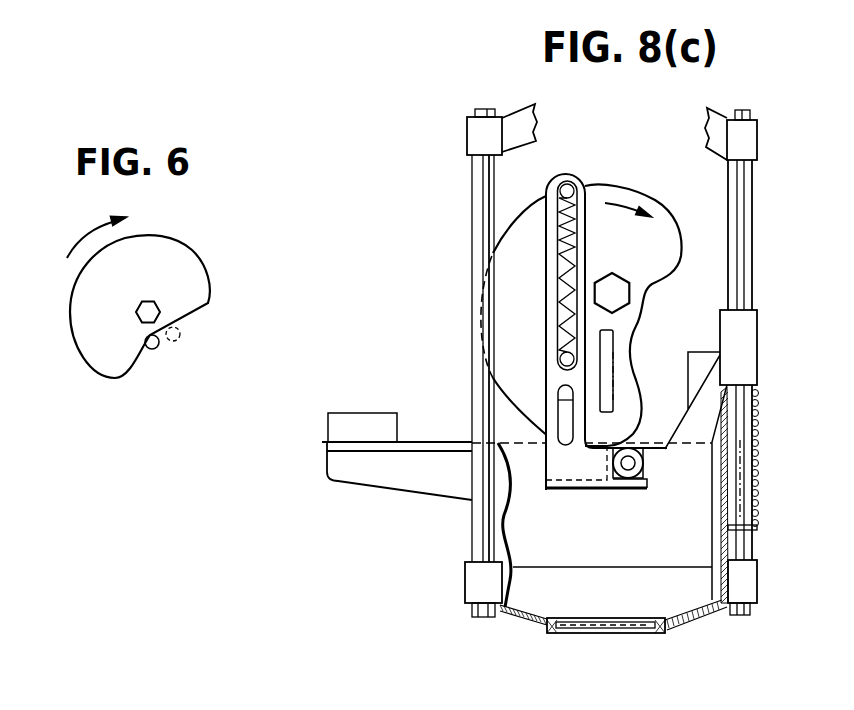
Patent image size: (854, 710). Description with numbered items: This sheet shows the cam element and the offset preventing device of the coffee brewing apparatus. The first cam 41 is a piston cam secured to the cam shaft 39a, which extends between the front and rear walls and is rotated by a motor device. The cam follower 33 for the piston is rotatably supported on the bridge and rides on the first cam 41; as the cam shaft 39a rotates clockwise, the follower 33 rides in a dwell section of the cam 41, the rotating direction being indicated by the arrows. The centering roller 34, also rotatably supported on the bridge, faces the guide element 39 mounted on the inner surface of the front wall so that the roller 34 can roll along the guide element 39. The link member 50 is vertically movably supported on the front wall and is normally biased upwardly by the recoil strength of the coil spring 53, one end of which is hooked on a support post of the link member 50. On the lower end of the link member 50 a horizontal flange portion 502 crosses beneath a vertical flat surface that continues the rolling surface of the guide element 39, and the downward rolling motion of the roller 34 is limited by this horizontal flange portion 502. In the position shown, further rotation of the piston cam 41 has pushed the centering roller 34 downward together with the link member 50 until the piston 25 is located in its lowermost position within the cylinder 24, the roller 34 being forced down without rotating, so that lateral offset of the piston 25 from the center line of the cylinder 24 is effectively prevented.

In FIG. 6, the first cam 41 is at (213, 283).
The first cam 41 is at (643, 194).
In FIG. 6, the cam shaft 39a is at (146, 300).
In FIG. 6, the cam follower 33 is at (158, 348).
The link member 50 is at (566, 155).
The coil spring 53 is at (560, 286).
The guide element 39 is at (615, 371).
The centering roller 34 is at (642, 448).
The horizontal flange portion 502 is at (624, 490).
The piston 25 is at (570, 553).
The cylinder 24 is at (708, 548).